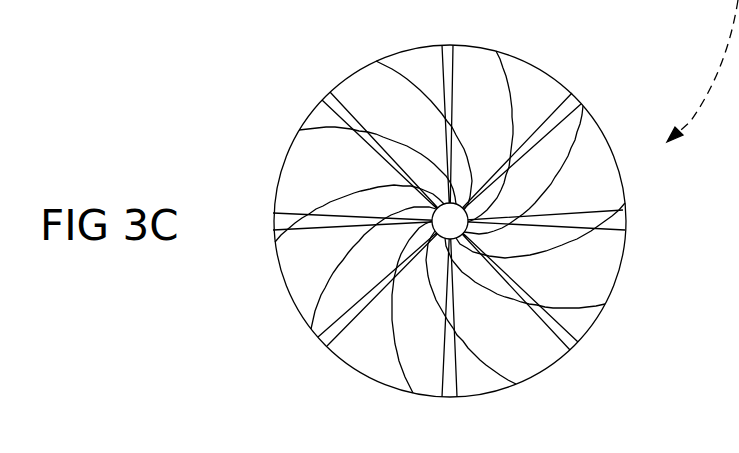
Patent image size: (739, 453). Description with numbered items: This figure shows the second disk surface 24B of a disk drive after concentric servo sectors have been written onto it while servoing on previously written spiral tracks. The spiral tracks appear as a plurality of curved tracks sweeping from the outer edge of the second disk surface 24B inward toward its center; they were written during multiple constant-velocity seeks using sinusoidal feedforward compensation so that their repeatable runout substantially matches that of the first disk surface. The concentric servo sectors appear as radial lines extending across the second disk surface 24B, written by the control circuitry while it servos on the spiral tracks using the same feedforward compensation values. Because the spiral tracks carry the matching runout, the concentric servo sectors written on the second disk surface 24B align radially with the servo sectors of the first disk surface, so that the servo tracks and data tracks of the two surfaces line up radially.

The second disk surface 24B is at (572, 74).